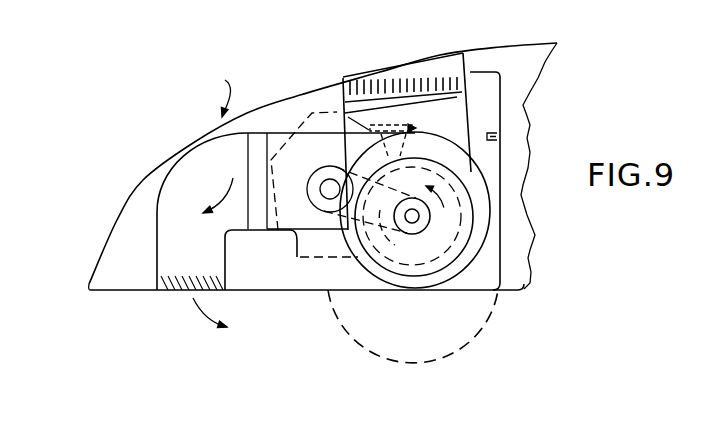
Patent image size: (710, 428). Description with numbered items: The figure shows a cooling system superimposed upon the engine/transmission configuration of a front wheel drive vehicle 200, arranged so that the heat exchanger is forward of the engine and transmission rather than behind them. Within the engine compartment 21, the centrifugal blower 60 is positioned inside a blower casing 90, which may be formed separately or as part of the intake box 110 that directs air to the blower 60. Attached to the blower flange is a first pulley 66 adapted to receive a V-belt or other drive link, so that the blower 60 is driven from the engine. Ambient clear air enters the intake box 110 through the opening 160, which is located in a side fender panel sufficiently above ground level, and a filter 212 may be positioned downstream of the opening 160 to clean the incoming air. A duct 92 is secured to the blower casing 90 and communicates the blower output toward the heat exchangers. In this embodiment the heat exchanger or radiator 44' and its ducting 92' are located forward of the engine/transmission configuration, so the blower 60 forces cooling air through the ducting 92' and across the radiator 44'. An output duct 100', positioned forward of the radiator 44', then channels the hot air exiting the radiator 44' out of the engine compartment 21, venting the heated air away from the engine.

The front wheel drive vehicle 200 is at (209, 95).
The output duct 100' is at (311, 166).
The intake box 110 is at (343, 88).
The opening 160 is at (392, 66).
The filter 212 is at (417, 82).
The duct 92 is at (481, 171).
The engine compartment 21 is at (293, 116).
The first pulley 66 is at (412, 198).
The blower casing 90 is at (458, 268).
The blower 60 is at (412, 263).
The heat exchanger 44' is at (291, 254).
The ducting 92' is at (307, 304).